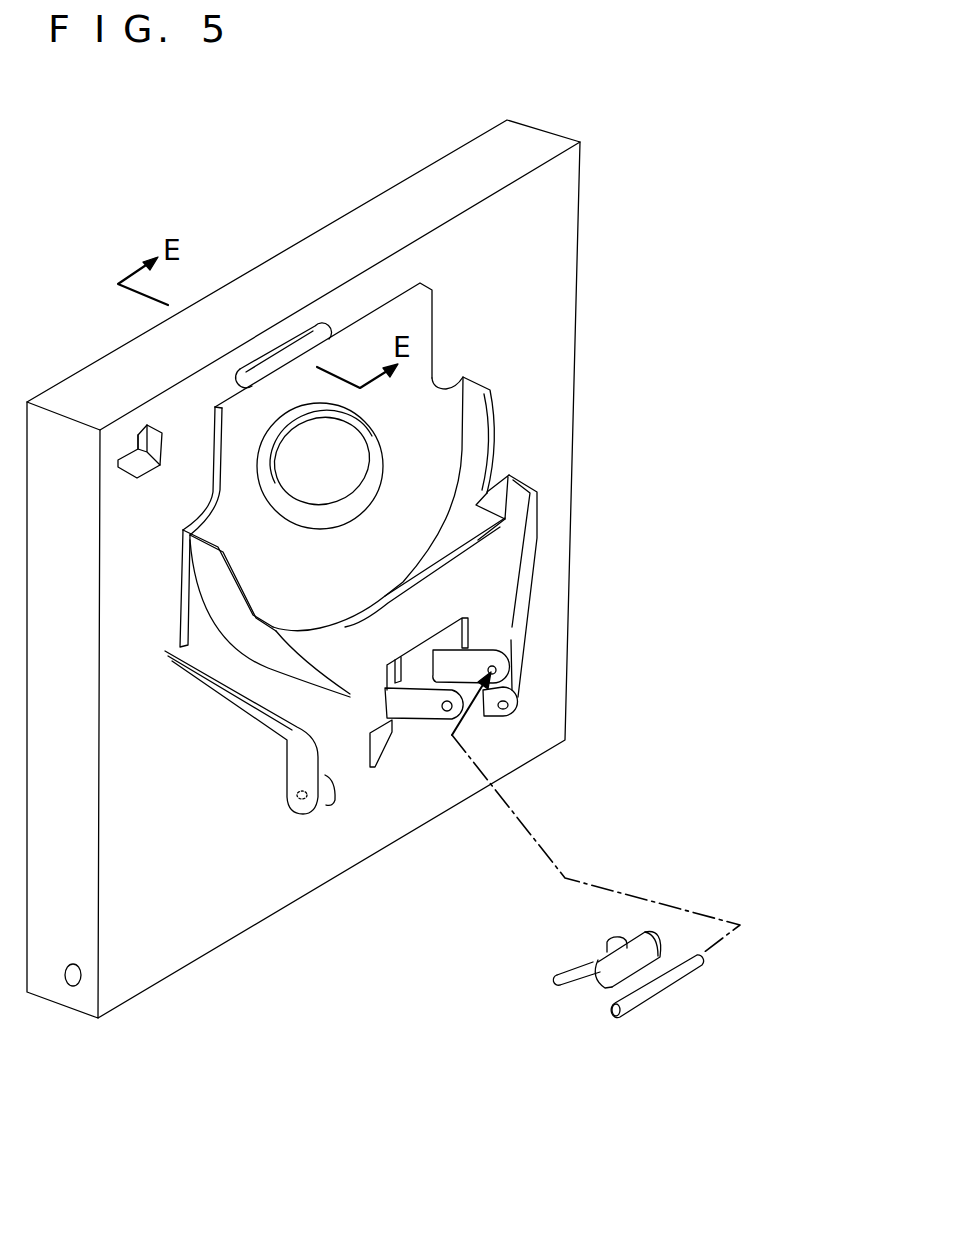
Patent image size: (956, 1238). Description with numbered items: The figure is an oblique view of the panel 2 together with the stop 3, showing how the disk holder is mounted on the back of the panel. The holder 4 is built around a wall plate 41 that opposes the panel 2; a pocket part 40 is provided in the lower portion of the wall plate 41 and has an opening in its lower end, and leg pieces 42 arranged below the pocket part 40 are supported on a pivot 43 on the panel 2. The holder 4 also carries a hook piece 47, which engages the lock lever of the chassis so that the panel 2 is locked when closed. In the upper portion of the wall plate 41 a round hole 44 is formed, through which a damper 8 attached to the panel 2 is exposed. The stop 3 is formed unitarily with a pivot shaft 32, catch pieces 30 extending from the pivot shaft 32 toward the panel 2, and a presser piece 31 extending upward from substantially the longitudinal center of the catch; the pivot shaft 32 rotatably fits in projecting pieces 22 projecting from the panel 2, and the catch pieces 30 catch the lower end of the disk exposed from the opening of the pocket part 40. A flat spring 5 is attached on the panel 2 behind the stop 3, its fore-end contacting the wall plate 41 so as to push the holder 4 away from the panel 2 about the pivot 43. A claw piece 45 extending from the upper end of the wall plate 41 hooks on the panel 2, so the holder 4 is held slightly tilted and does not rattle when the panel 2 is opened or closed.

The panel 2 is at (548, 260).
The stop 3 is at (477, 1013).
The holder 4 is at (650, 492).
The flat spring 5 is at (403, 733).
The damper 8 is at (345, 466).
The projecting pieces 22 is at (450, 665).
The catch pieces 30 is at (570, 995).
The presser piece 31 is at (593, 998).
The pivot shaft 32 is at (640, 998).
The pocket part 40 is at (482, 530).
The wall plate 41 is at (440, 424).
The leg pieces 42 is at (507, 640).
The pivot 43 is at (513, 707).
The round hole 44 is at (380, 430).
The claw piece 45 is at (287, 352).
The hook piece 47 is at (145, 437).